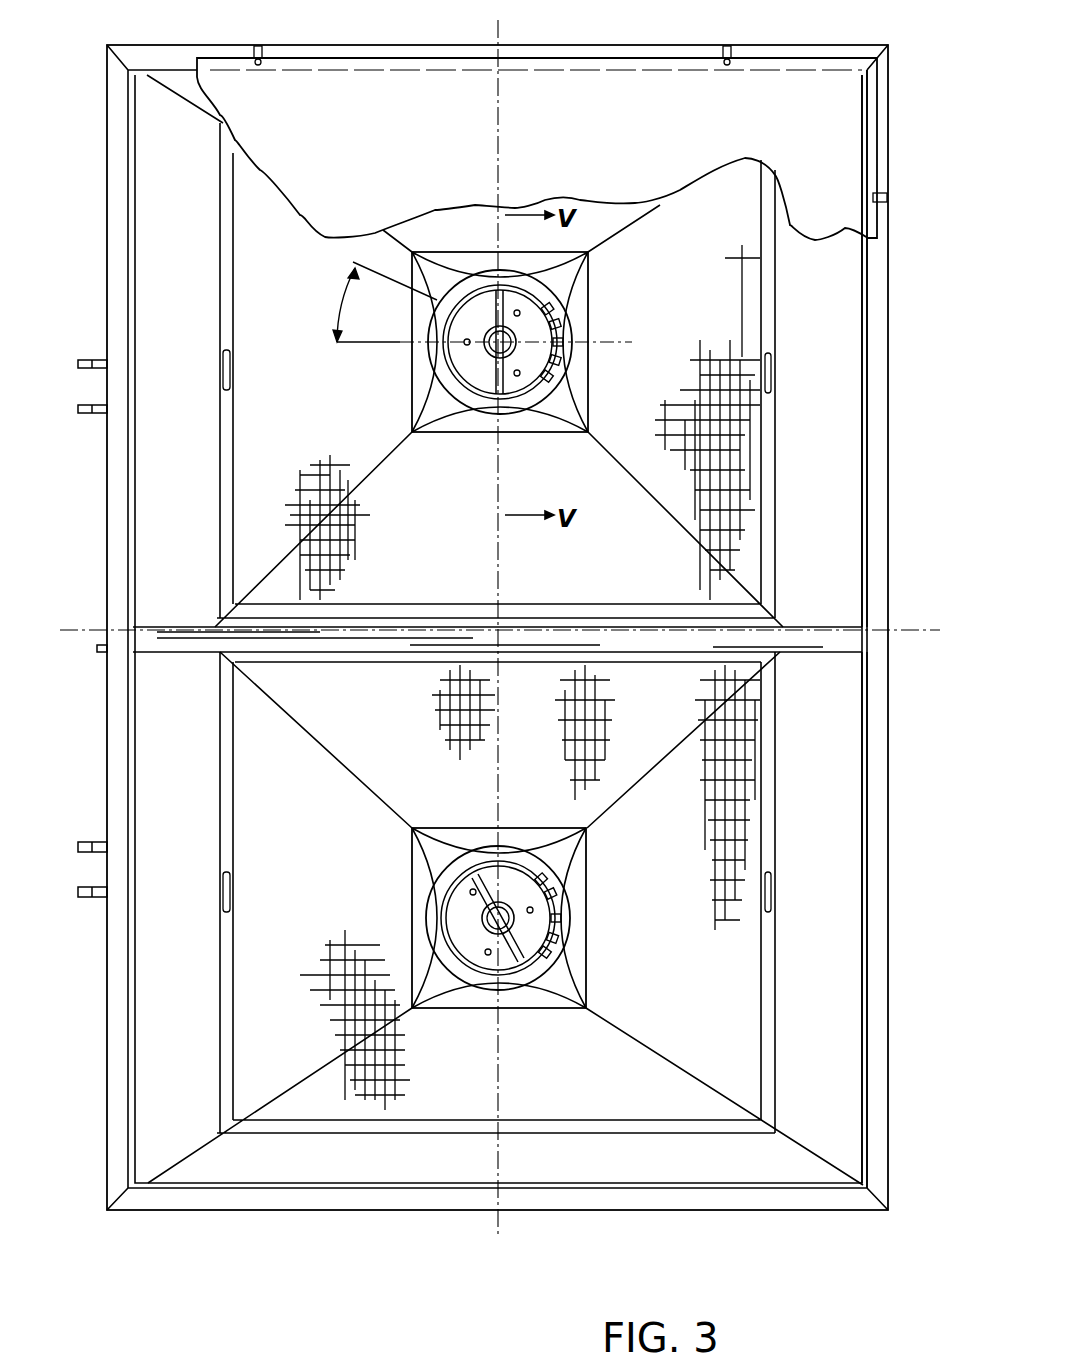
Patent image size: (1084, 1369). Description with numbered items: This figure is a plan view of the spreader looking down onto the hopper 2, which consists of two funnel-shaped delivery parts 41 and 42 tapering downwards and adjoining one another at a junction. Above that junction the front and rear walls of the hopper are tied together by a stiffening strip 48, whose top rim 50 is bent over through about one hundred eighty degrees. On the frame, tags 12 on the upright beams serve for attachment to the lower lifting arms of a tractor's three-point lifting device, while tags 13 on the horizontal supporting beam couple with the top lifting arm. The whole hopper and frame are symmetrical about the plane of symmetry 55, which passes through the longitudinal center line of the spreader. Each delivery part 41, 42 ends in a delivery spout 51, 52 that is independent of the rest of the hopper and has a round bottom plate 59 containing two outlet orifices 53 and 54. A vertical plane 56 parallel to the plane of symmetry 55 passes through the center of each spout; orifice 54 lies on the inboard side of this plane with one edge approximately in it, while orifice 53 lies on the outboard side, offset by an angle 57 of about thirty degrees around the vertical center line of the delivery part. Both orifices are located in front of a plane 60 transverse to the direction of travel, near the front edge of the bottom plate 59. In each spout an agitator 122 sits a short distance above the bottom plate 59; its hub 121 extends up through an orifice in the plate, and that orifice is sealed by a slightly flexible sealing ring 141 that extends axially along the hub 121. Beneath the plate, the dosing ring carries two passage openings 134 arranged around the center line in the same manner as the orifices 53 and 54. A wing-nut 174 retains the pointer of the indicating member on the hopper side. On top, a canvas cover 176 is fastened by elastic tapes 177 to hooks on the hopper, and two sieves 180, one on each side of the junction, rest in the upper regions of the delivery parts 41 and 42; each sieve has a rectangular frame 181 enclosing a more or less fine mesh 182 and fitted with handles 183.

The hopper 2 is at (897, 550).
The tags 12 is at (108, 362).
The tags 13 is at (107, 610).
The delivery part 41 is at (823, 412).
The delivery part 42 is at (845, 915).
The stiffening strip 48 is at (585, 628).
The top rim 50 is at (425, 648).
The delivery spout 51 is at (585, 290).
The delivery spout 52 is at (414, 866).
The outlet orifice 53 is at (440, 318).
The outlet orifice 54 is at (440, 372).
The plane of symmetry 55 is at (937, 632).
The vertical plane 56 is at (362, 343).
The angle 57 is at (340, 298).
The bottom plate 59 is at (537, 330).
The plane 60 is at (500, 44).
The hub 121 is at (515, 350).
The agitator 122 is at (552, 383).
The passage openings 134 is at (455, 285).
The sealing ring 141 is at (497, 350).
The wing-nut 174 is at (500, 1213).
The canvas cover 176 is at (633, 92).
The elastic tapes 177 is at (262, 33).
The sieves 180 is at (212, 469).
The frame 181 is at (418, 606).
The mesh 182 is at (713, 360).
The handles 183 is at (223, 372).